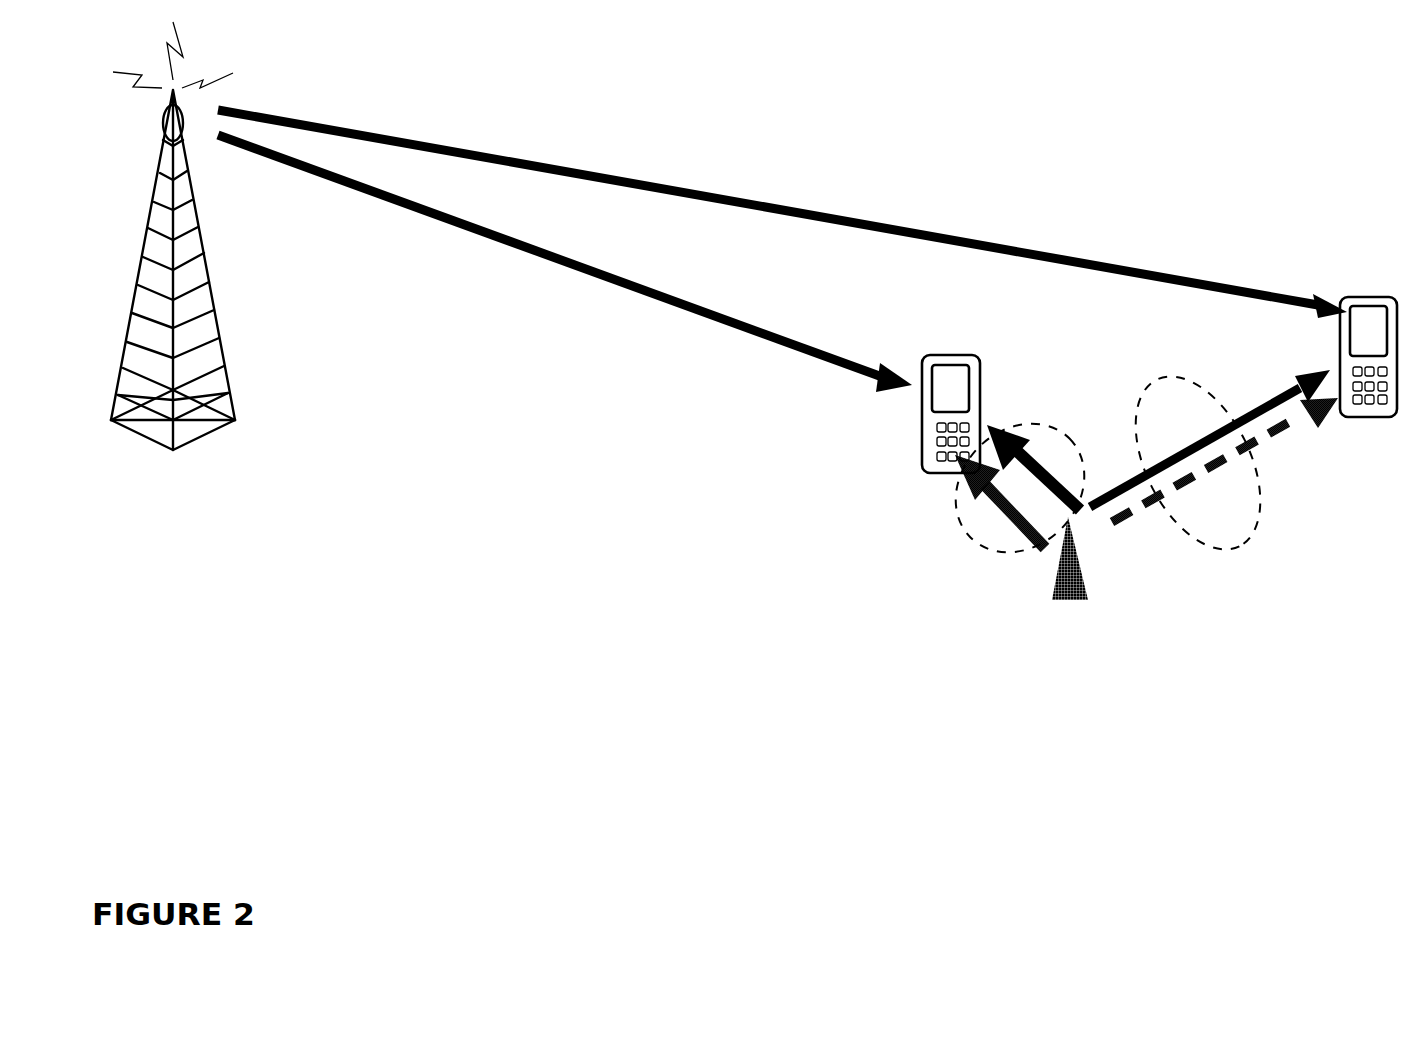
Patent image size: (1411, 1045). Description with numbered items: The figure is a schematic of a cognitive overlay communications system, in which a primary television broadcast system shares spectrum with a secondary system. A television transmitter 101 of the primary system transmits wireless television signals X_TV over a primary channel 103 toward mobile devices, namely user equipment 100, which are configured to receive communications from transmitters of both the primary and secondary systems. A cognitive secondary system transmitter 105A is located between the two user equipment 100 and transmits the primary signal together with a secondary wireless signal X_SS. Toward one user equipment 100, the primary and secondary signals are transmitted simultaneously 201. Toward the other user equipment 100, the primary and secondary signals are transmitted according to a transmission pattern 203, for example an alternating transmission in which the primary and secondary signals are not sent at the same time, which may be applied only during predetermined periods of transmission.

The transmitter 101 is at (210, 430).
The primary channel 103 is at (443, 220).
The user equipment 100 is at (918, 458).
The cognitive secondary system transmitter 105A is at (1085, 600).
The simultaneous transmission 201 is at (967, 547).
The transmission pattern 203 is at (1263, 530).